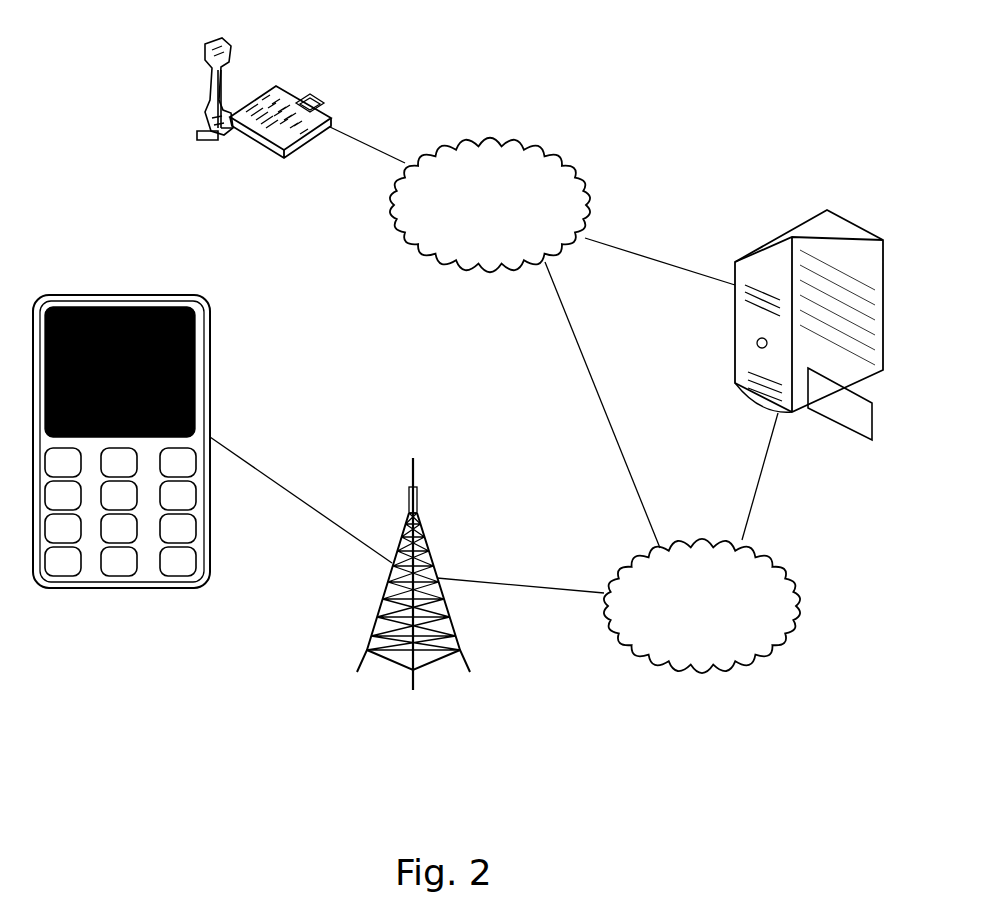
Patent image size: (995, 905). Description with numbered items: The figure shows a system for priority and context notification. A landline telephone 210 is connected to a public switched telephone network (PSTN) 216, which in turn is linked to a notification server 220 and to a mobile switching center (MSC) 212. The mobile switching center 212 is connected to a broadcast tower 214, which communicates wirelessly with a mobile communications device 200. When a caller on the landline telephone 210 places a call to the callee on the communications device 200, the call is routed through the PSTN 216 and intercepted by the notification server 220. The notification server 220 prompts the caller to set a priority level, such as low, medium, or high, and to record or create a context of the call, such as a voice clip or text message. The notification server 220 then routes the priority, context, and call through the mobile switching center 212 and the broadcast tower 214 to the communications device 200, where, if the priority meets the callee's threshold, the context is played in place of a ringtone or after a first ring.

The communications device 200 is at (122, 588).
The landline telephone 210 is at (308, 92).
The mobile switching center 212 is at (640, 561).
The broadcast tower 214 is at (410, 698).
The public switched telephone network 216 is at (425, 243).
The notification server 220 is at (790, 227).